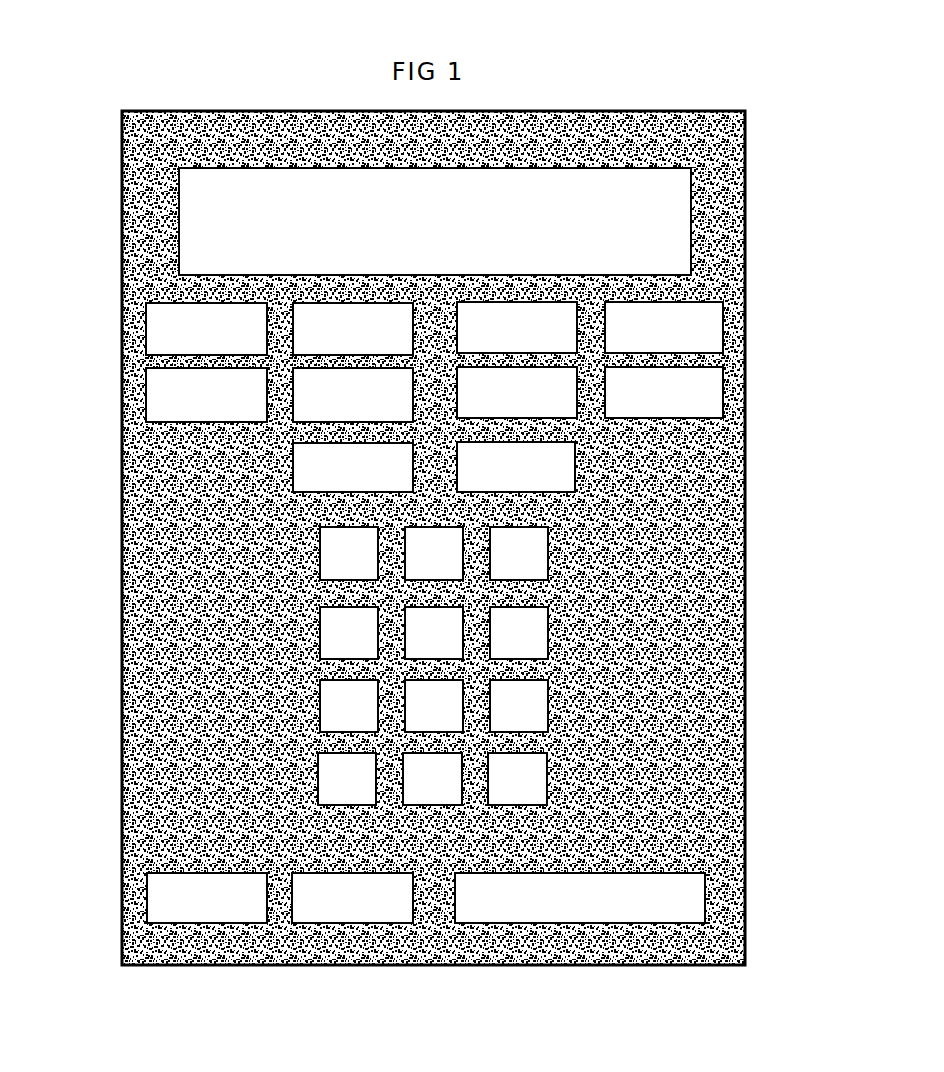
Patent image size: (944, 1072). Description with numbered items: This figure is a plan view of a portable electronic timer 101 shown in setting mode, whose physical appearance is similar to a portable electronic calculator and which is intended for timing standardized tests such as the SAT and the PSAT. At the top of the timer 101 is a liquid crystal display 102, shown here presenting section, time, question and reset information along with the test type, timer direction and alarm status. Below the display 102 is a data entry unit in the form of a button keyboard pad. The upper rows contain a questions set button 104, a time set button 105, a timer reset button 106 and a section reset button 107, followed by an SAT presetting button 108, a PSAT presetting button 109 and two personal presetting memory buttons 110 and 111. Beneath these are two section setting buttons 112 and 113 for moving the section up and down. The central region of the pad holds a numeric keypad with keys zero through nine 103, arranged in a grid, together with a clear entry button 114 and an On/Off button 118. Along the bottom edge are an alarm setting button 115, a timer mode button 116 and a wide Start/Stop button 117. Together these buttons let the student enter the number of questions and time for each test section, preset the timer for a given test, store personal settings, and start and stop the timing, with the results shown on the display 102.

The electronic timer 101 is at (690, 150).
The liquid crystal display 102 is at (680, 205).
The numeric keypad 103 is at (362, 647).
The questions set button 104 is at (168, 341).
The time set button 105 is at (308, 328).
The timer reset button 106 is at (603, 302).
The section reset button 107 is at (705, 339).
The SAT presetting button 108 is at (237, 406).
The PSAT presetting button 109 is at (320, 407).
The personal presetting memory button 110 is at (557, 407).
The personal presetting memory button 111 is at (705, 405).
The section setting button 112 is at (318, 484).
The section setting button 113 is at (563, 480).
The clear entry button 114 is at (418, 792).
The alarm setting button 115 is at (173, 910).
The timer mode button 116 is at (388, 910).
The Start/Stop button 117 is at (500, 910).
The On/Off button 118 is at (537, 790).